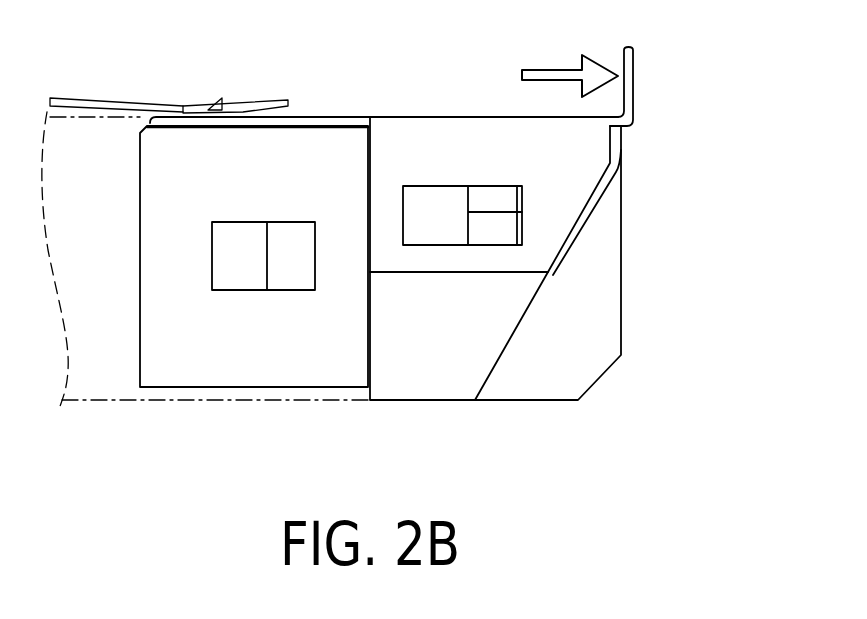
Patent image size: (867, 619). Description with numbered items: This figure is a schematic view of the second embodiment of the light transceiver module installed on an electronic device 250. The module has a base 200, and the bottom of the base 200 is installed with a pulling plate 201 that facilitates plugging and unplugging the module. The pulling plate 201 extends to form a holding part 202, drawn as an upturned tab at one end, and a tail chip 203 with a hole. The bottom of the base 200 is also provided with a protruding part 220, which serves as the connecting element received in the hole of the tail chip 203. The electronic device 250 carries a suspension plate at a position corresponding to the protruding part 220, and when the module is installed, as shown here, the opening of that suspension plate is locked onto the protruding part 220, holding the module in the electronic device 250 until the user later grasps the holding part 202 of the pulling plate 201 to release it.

The base 200 is at (588, 193).
The pulling plate 201 is at (467, 117).
The holding part 202 is at (634, 77).
The tail chip 203 is at (307, 117).
The protruding part 220 is at (221, 100).
The electronic device 250 is at (88, 100).